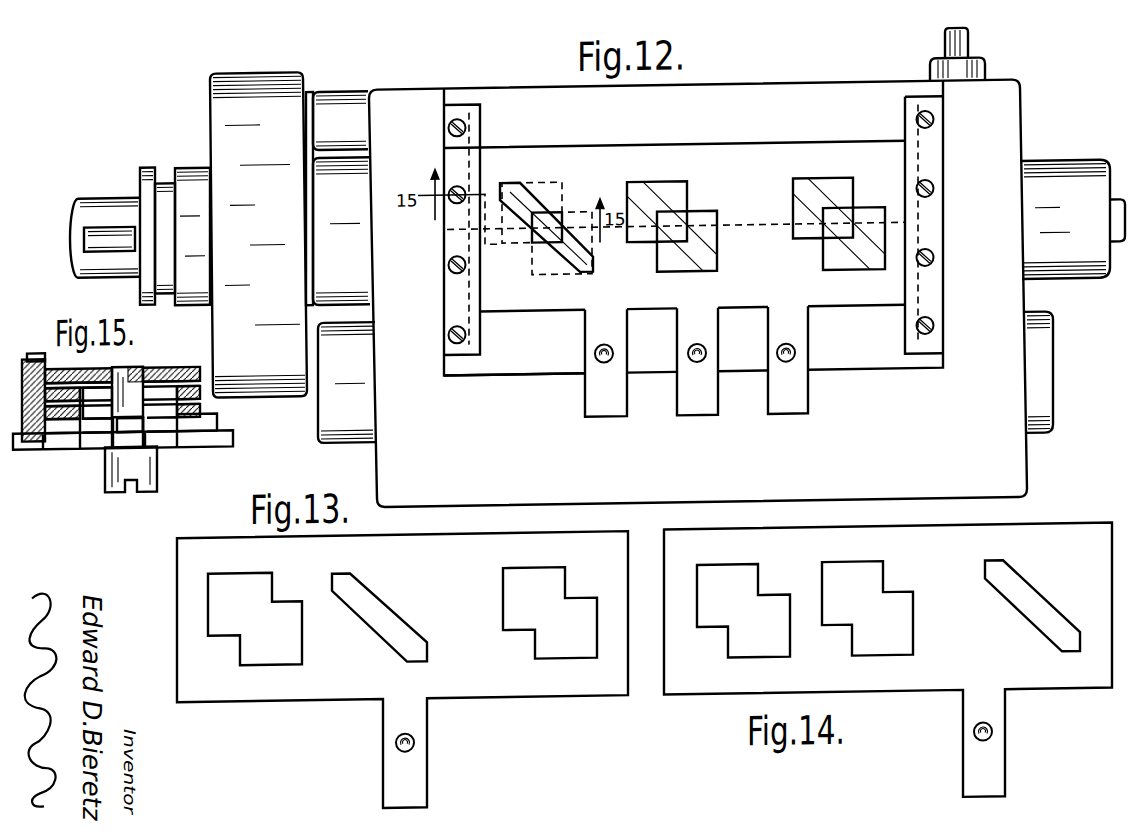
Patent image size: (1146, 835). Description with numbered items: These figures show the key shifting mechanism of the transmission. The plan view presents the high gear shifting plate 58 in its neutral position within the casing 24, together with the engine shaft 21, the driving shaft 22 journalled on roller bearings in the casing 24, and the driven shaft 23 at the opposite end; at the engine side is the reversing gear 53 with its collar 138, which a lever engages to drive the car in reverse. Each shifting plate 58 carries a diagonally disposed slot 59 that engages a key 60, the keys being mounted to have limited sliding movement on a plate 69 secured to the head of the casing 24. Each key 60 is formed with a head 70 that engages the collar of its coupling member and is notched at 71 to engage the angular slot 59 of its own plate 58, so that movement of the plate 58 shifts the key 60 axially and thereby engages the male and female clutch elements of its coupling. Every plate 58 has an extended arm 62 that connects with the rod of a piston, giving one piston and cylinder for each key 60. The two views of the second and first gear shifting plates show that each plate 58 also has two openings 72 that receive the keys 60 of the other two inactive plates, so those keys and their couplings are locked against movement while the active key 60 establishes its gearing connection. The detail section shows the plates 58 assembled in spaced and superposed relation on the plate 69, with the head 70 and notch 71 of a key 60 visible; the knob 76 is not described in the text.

In FIG. 12, the engine shaft 21 is at (112, 191).
In FIG. 12, the driving shaft 22 is at (310, 221).
In FIG. 12, the driven shaft 23 is at (1110, 232).
In FIG. 12, the casing 24 is at (407, 82).
In FIG. 12, the reversing gear 53 is at (210, 72).
In FIG. 12, the plate 58 is at (840, 305).
In FIG. 13, the plate 58 is at (473, 684).
In FIG. 14, the plate 58 is at (886, 688).
In FIG. 15, the plate 58 is at (193, 372).
In FIG. 12, the diagonally disposed slot 59 is at (590, 258).
In FIG. 13, the diagonally disposed slot 59 is at (372, 590).
In FIG. 14, the diagonally disposed slot 59 is at (1000, 598).
In FIG. 12, the key 60 is at (548, 228).
In FIG. 15, the key 60 is at (138, 458).
In FIG. 12, the arm 62 is at (690, 355).
In FIG. 13, the arm 62 is at (418, 723).
In FIG. 14, the arm 62 is at (1000, 720).
In FIG. 15, the plate 69 is at (63, 433).
In FIG. 15, the head 70 is at (133, 485).
In FIG. 15, the notch 71 is at (140, 361).
In FIG. 12, the opening 72 is at (548, 182).
In FIG. 13, the opening 72 is at (271, 577).
In FIG. 14, the opening 72 is at (822, 568).
In FIG. 15, the opening 72 is at (100, 405).
In FIG. 12, the knob 76 is at (968, 50).
In FIG. 12, the collar 138 is at (162, 156).